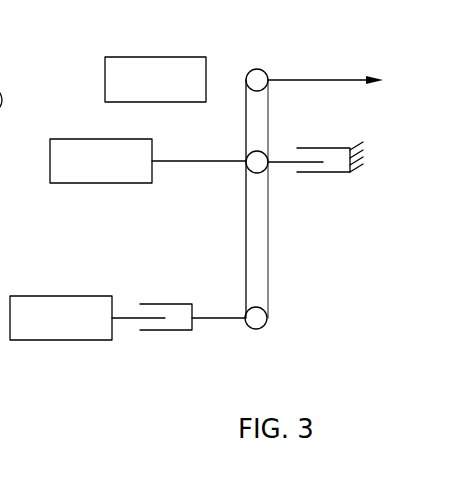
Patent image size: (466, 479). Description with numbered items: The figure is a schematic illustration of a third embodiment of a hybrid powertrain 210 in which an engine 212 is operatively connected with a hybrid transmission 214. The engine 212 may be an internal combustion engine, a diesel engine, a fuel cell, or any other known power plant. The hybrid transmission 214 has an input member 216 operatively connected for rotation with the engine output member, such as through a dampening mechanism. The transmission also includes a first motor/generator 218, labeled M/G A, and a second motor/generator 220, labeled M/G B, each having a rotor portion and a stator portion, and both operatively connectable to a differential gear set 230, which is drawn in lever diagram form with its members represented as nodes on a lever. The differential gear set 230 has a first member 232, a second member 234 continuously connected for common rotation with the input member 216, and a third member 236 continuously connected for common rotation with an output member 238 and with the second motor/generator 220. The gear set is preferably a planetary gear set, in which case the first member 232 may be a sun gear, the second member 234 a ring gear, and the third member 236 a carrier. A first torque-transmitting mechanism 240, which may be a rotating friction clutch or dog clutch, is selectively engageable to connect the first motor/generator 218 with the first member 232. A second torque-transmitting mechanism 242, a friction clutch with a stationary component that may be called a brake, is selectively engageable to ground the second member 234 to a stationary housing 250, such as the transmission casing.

The hybrid powertrain 210 is at (351, 304).
The engine 212 is at (108, 184).
The hybrid transmission 214 is at (355, 232).
The input member 216 is at (216, 162).
The first motor/generator 218 is at (82, 295).
The second motor/generator 220 is at (142, 57).
The differential gear set 230 is at (291, 232).
The first member 232 is at (266, 320).
The second member 234 is at (260, 156).
The third member 236 is at (256, 69).
The output member 238 is at (325, 80).
The first torque-transmitting mechanism 240 is at (131, 330).
The second torque-transmitting mechanism 242 is at (292, 174).
The stationary housing 250 is at (352, 147).